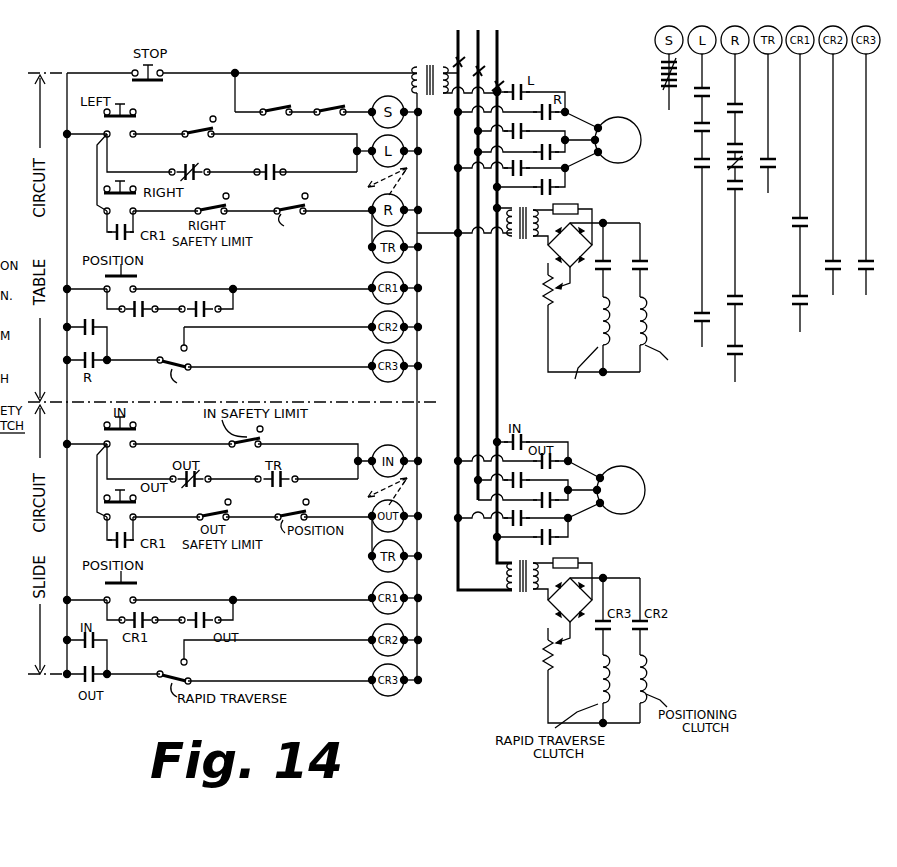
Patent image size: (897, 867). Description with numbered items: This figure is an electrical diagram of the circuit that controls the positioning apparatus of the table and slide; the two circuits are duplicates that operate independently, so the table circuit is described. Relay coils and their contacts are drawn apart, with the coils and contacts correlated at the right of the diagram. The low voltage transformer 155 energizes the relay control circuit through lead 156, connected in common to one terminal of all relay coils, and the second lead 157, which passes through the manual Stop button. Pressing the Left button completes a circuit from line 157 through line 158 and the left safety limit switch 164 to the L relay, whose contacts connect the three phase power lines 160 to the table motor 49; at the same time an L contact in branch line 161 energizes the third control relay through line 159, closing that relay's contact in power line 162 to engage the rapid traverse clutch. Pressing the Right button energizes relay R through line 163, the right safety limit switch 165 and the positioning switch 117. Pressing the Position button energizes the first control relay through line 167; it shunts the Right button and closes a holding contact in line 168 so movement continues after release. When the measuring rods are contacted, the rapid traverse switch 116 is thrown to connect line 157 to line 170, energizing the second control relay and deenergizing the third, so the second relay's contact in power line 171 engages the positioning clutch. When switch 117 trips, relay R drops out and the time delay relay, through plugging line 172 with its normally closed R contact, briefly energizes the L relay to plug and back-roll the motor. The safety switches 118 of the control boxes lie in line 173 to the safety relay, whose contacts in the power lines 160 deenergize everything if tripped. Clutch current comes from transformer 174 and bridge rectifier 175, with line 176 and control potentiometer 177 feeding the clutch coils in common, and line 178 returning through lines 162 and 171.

The motor 49 is at (641, 146).
The rapid traverse switch 116 is at (188, 362).
The positioning switch 117 is at (302, 199).
The safety switch 118 is at (261, 115).
The low voltage transformer 155 is at (424, 68).
The transformer lead 156 is at (464, 235).
The second transformer lead 157 is at (258, 73).
The line 158 is at (288, 136).
The line 159 is at (325, 366).
The three phase power lines 160 is at (496, 37).
The branch line 161 is at (107, 347).
The power line 162 is at (597, 294).
The line 163 is at (330, 210).
The left safety limit switch 164 is at (184, 131).
The right safety limit switch 165 is at (212, 207).
The line 167 is at (302, 288).
The line 168 is at (163, 309).
The line 170 is at (298, 327).
The power line 171 is at (648, 294).
The plugging line 172 is at (138, 172).
The line 173 is at (235, 90).
The transformer 174 is at (516, 233).
The bridge rectifier 175 is at (547, 279).
The line 176 is at (548, 356).
The control potentiometer 177 is at (537, 295).
The line 178 is at (620, 223).